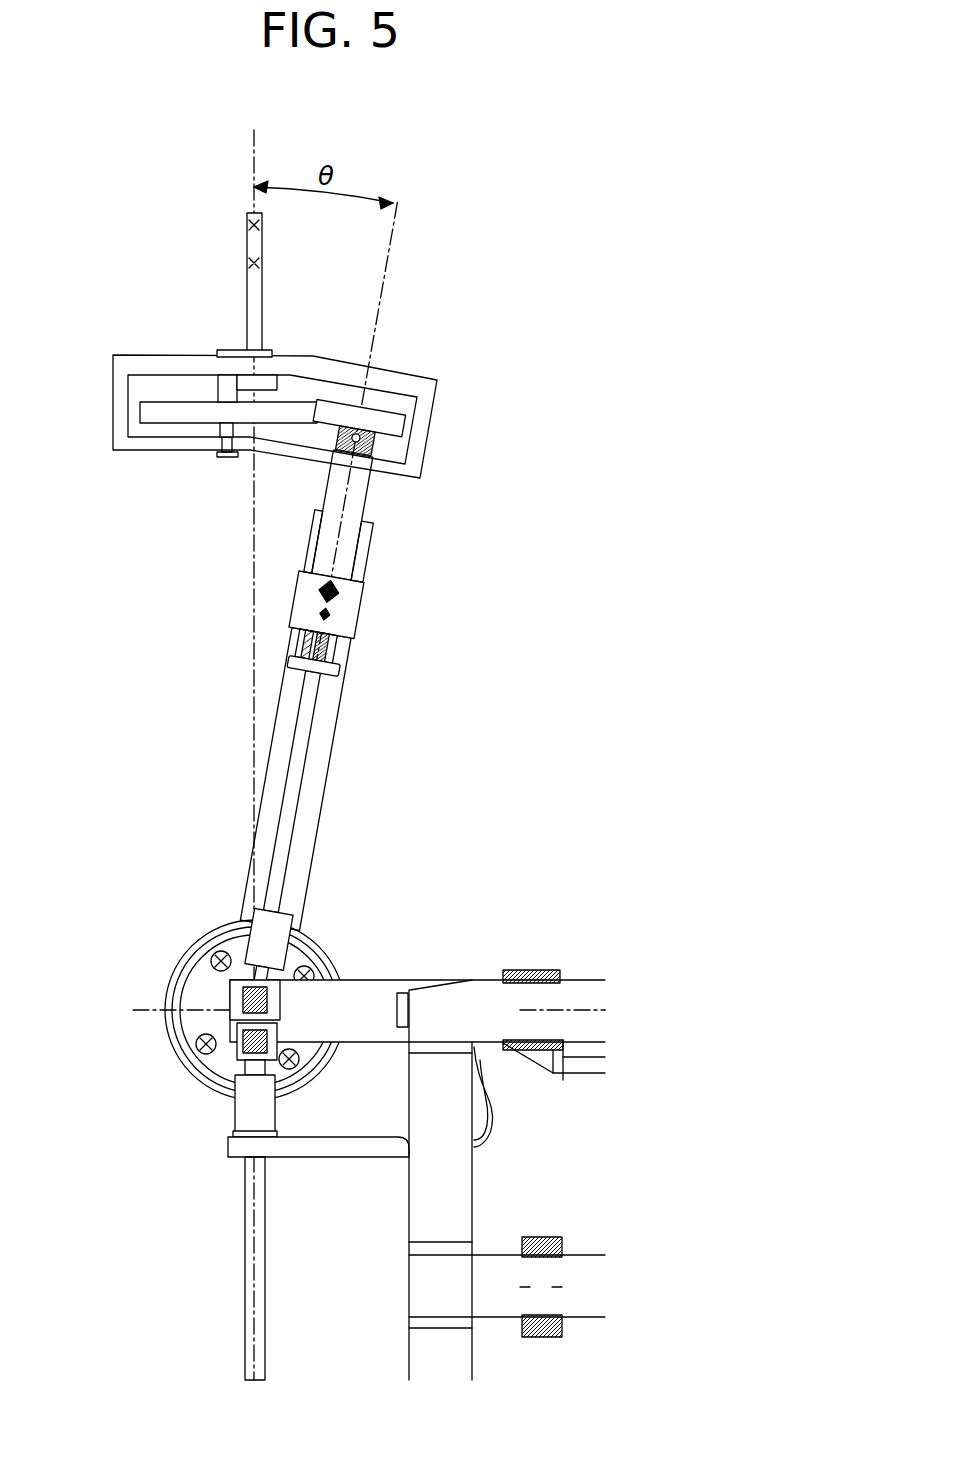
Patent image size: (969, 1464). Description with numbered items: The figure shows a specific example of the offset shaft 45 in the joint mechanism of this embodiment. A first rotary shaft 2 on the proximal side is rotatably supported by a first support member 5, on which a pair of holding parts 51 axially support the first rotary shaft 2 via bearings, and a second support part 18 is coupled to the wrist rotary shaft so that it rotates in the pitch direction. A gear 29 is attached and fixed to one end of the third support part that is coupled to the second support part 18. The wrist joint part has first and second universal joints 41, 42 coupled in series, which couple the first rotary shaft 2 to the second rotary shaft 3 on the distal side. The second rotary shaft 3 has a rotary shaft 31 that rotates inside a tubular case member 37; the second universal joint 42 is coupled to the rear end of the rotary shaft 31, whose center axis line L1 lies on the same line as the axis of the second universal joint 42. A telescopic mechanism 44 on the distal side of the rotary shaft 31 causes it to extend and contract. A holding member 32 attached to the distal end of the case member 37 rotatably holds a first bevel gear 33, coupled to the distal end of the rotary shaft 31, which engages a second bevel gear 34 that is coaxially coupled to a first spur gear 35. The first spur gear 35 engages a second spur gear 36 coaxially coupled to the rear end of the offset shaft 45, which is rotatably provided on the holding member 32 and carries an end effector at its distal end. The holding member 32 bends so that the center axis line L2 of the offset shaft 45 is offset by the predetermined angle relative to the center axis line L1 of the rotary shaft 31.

The first rotary shaft 2 is at (248, 1335).
The second rotary shaft 3 is at (175, 798).
The first support member 5 is at (415, 1222).
The second support part 18 is at (372, 987).
The gear 29 is at (185, 998).
The rotary shaft 31 is at (297, 735).
The holding member 32 is at (435, 411).
The first bevel gear 33 is at (380, 400).
The second bevel gear 34 is at (148, 417).
The first spur gear 35 is at (200, 385).
The second spur gear 36 is at (270, 378).
The case member 37 is at (352, 607).
The first universal joint 41 is at (240, 1115).
The second universal joint 42 is at (247, 943).
The telescopic mechanism 44 is at (300, 648).
The offset shaft 45 is at (247, 250).
The holding parts 51 is at (330, 1160).
The center axis line of the rotary shaft L1 is at (388, 250).
The center axis line of the offset shaft L2 is at (254, 150).